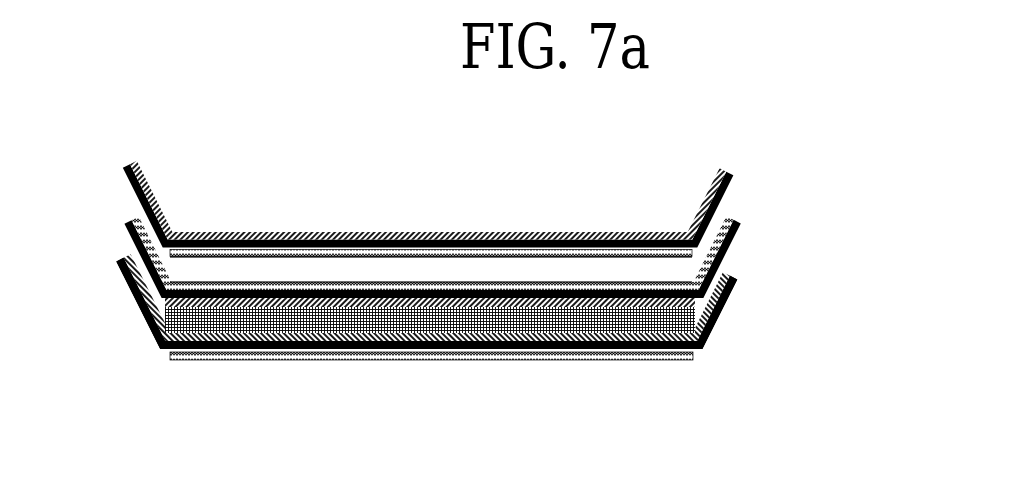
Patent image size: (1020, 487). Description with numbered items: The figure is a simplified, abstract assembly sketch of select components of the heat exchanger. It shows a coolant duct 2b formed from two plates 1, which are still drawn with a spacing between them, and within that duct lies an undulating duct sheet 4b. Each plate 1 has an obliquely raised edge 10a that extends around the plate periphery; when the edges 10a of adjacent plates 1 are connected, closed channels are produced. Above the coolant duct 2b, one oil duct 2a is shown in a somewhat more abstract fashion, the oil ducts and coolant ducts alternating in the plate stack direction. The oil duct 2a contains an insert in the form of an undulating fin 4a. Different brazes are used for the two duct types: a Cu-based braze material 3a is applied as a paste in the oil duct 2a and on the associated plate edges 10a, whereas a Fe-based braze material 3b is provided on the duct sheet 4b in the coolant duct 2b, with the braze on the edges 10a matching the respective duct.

The plate 1 is at (476, 290).
The oil duct 2a is at (431, 269).
The coolant duct 2b is at (152, 333).
The Cu-based braze material 3a is at (136, 216).
The Fe-based braze material 3b is at (150, 186).
The undulating fin 4a is at (431, 269).
The undulating duct sheet 4b is at (543, 323).
The obliquely raised plate edge 10a is at (136, 162).